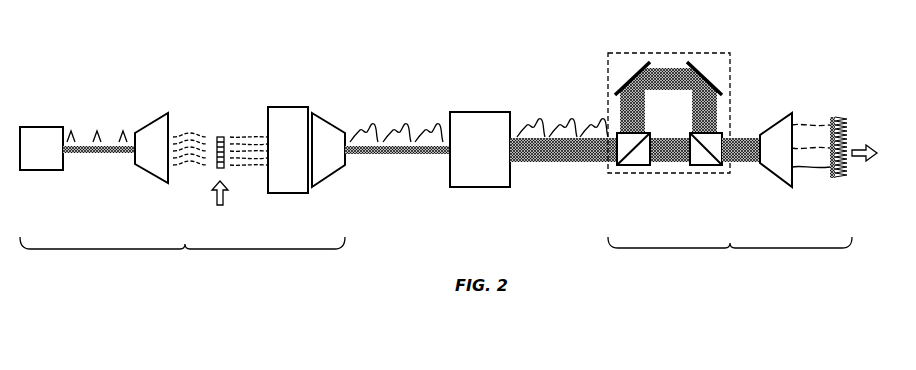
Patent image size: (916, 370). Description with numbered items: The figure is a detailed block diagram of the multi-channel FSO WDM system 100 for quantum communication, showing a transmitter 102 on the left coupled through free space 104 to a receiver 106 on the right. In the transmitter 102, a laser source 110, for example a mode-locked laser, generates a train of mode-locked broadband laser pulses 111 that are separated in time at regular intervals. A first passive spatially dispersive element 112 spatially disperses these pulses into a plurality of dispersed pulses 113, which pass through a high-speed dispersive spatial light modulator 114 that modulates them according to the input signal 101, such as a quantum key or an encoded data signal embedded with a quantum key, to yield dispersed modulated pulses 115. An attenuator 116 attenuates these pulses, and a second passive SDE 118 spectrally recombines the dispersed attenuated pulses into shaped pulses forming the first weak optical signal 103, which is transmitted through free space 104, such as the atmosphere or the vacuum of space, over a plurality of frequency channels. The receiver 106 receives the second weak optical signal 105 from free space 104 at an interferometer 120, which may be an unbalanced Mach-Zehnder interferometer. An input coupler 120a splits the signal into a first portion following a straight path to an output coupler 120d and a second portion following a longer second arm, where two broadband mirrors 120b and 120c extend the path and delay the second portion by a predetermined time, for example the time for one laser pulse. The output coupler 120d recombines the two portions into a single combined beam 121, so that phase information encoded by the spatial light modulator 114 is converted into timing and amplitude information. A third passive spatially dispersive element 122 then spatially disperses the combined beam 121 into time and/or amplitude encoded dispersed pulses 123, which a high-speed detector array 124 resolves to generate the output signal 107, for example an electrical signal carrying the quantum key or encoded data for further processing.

The multi-channel FSO WDM system 100 is at (57, 50).
The input signal 101 is at (220, 207).
The transmitter 102 is at (182, 255).
The first weak optical signal 103 is at (400, 156).
The free space 104 is at (478, 112).
The second weak optical signal 105 is at (559, 163).
The receiver 106 is at (730, 255).
The output signal 107 is at (866, 146).
The laser source 110 is at (44, 127).
The mode-locked broadband laser pulses 111 is at (98, 158).
The first passive spatially dispersive element 112 is at (160, 118).
The dispersed pulses 113 is at (190, 164).
The high-speed dispersive spatial light modulator 114 is at (220, 137).
The dispersed modulated pulses 115 is at (249, 165).
The attenuator 116 is at (289, 107).
The second passive SDE 118 is at (325, 114).
The interferometer 120 is at (672, 110).
The input coupler 120a is at (635, 166).
The broadband mirror 120b is at (634, 75).
The broadband mirror 120c is at (705, 75).
The output coupler 120d is at (703, 166).
The combined beam 121 is at (743, 163).
The third passive spatially dispersive element 122 is at (783, 118).
The time and/or amplitude encoded dispersed pulses 123 is at (810, 168).
The high-speed detector array 124 is at (833, 117).